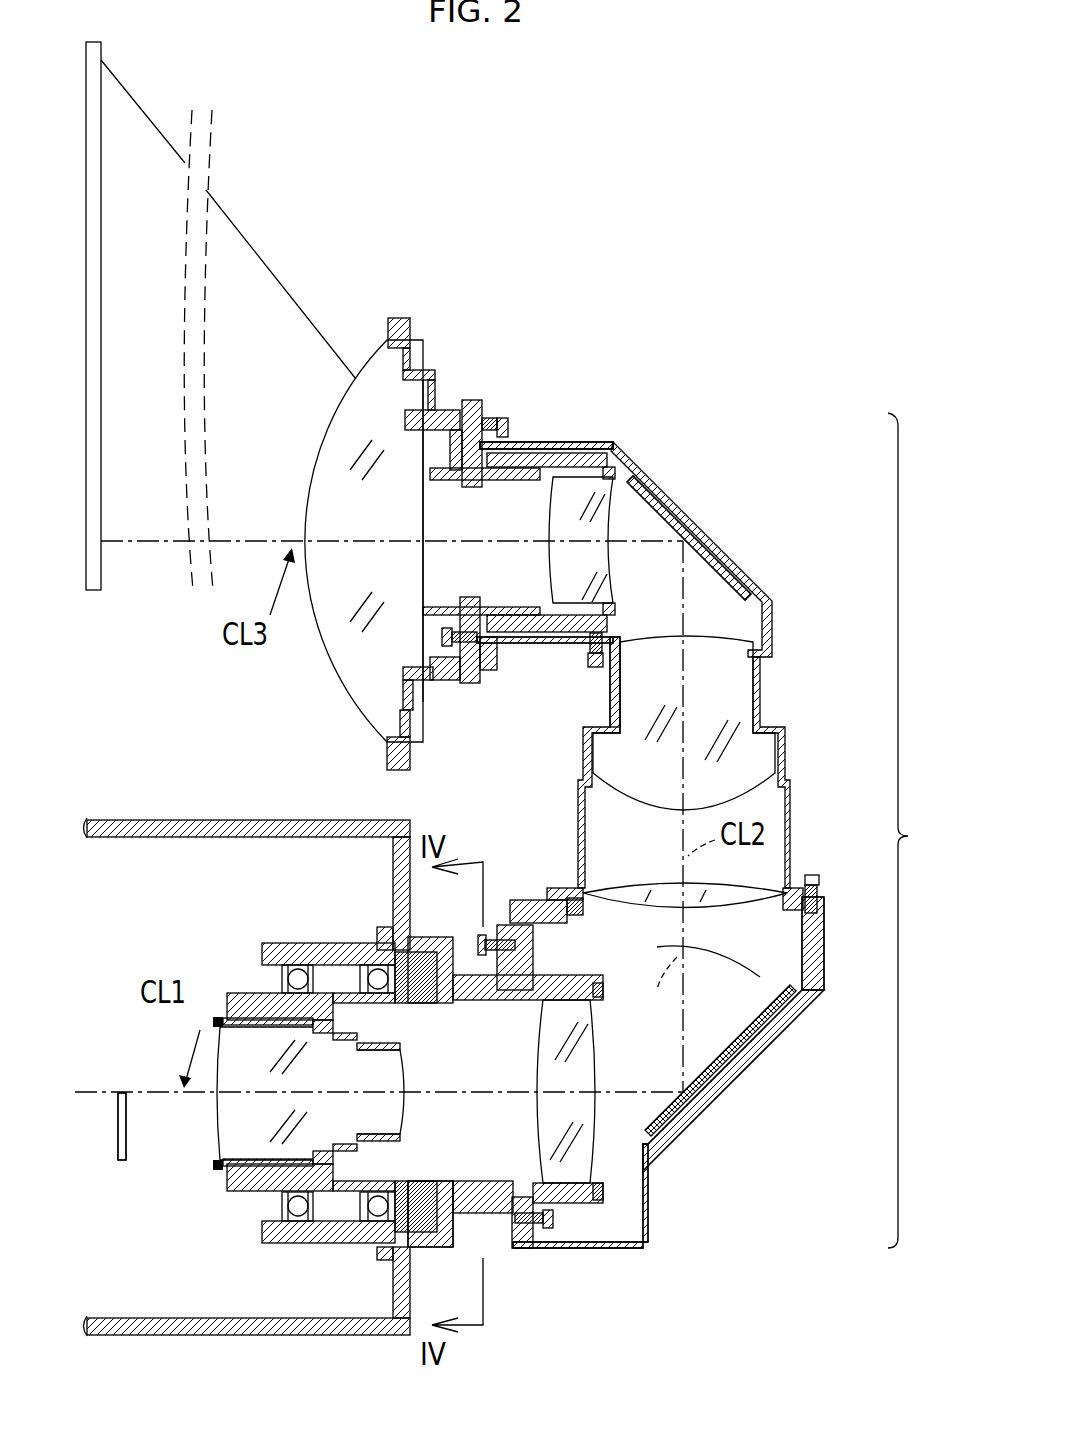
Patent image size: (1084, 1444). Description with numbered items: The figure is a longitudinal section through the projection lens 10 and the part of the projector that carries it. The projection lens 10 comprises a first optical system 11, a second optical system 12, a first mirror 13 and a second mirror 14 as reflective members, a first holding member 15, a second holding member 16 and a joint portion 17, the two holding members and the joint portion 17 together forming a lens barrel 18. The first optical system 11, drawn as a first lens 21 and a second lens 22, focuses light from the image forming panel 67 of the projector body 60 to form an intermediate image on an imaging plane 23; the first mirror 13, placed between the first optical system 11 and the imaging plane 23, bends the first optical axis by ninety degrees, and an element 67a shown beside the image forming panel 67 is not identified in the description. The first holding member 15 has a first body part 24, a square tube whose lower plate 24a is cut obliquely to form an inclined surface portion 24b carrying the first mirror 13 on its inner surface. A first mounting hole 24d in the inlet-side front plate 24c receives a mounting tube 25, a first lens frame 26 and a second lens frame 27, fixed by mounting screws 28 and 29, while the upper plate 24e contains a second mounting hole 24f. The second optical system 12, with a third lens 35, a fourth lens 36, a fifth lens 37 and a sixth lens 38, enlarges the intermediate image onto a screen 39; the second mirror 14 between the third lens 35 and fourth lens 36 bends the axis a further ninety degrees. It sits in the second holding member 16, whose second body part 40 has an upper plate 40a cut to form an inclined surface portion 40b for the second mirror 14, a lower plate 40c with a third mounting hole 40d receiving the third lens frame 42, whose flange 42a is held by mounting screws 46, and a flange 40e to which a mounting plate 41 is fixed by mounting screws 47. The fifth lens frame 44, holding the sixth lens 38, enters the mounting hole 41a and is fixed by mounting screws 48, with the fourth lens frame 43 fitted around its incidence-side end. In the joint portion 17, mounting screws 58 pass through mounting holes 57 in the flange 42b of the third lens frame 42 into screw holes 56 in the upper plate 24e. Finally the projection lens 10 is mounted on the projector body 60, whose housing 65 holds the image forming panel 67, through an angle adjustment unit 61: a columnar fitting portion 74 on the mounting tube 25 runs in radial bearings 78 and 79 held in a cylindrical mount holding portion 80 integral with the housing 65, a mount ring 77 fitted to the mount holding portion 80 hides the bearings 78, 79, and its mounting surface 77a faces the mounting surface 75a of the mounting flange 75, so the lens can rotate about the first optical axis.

The projection lens 10 is at (610, 238).
The first optical system 11 is at (668, 1165).
The second optical system 12 is at (645, 435).
The first mirror 13 is at (765, 1012).
The second mirror 14 is at (705, 535).
The first holding member 15 is at (700, 1120).
The second holding member 16 is at (670, 493).
The joint portion 17 is at (836, 882).
The lens barrel 18 is at (914, 830).
The first lens 21 is at (255, 1120).
The second lens 22 is at (600, 1245).
The imaging plane 23 is at (665, 958).
The first body part 24 is at (810, 993).
The lower plate 24a is at (620, 1250).
The inclined surface portion 24b is at (690, 1110).
The inlet-side front plate 24c is at (505, 930).
The first mounting hole 24d is at (515, 1182).
The upper plate 24e is at (575, 898).
The second mounting hole 24f is at (568, 915).
The mounting tube 25 is at (218, 1183).
The first lens frame 26 is at (257, 1192).
The second lens frame 27 is at (555, 1215).
The mounting screw 28 is at (507, 1000).
The mounting screw 29 is at (548, 1248).
The third lens 35 is at (625, 888).
The fourth lens 36 is at (745, 690).
The fifth lens 37 is at (587, 570).
The sixth lens 38 is at (372, 385).
The screen 39 is at (105, 52).
The second body part 40 is at (600, 440).
The upper plate 40a is at (560, 443).
The inclined surface portion 40b is at (683, 512).
The lower plate 40c is at (527, 643).
The third mounting hole 40d is at (608, 633).
The flange 40e is at (487, 408).
The mounting plate 41 is at (470, 400).
The mounting hole 41a is at (465, 481).
The third lens frame 42 is at (790, 785).
The flange 42a is at (600, 650).
The flange 42b is at (572, 888).
The fourth lens frame 43 is at (530, 460).
The fifth lens frame 44 is at (400, 318).
The mounting screws 46 is at (596, 667).
The mounting screws 47 is at (505, 418).
The mounting screws 48 is at (440, 637).
The screw holes 56 is at (805, 912).
The mounting holes 57 is at (805, 885).
The mounting screws 58 is at (812, 878).
The projector body 60 is at (187, 806).
The angle adjustment unit 61 is at (503, 1270).
The housing 65 is at (258, 828).
The image forming panel 67 is at (115, 1085).
The aperture 67a is at (128, 1160).
The fitting portion 74 is at (240, 1005).
The mounting flange 75 is at (440, 937).
The mounting surface 75a is at (432, 1247).
The mount ring 77 is at (395, 980).
The mounting surface 77a is at (440, 1232).
The bearing 78 is at (375, 975).
The bearing 79 is at (285, 975).
The mount holding portion 80 is at (310, 955).